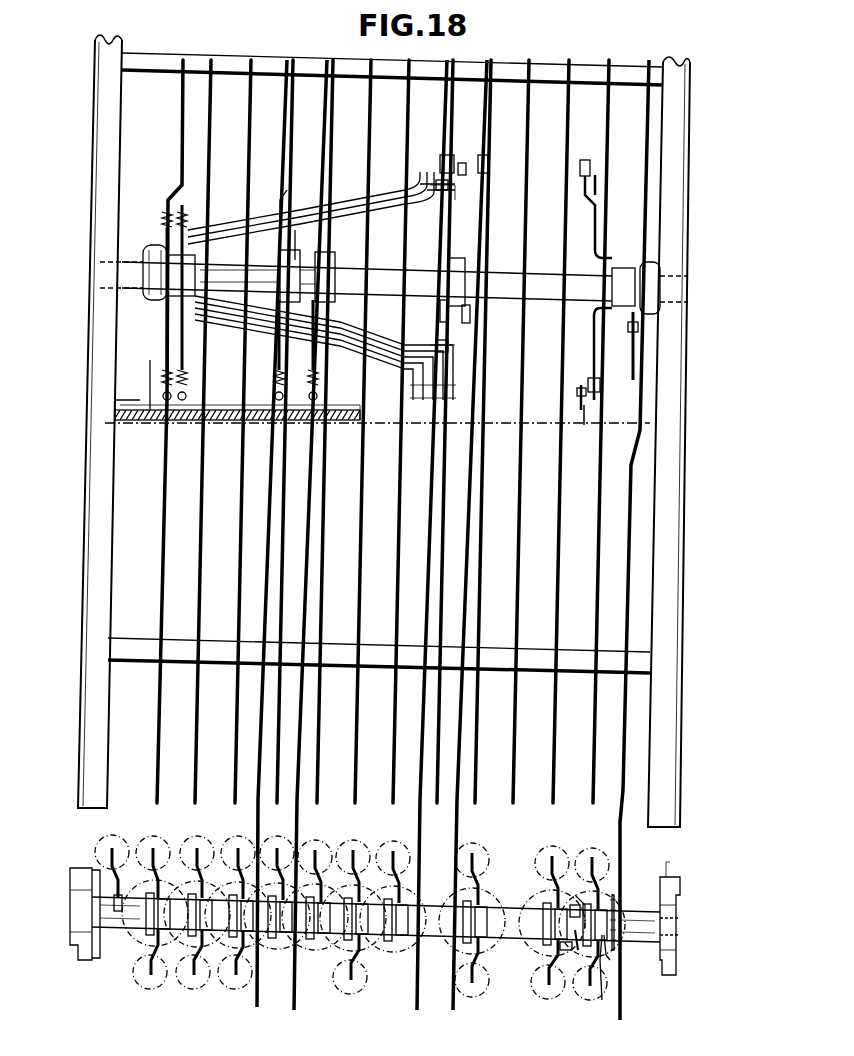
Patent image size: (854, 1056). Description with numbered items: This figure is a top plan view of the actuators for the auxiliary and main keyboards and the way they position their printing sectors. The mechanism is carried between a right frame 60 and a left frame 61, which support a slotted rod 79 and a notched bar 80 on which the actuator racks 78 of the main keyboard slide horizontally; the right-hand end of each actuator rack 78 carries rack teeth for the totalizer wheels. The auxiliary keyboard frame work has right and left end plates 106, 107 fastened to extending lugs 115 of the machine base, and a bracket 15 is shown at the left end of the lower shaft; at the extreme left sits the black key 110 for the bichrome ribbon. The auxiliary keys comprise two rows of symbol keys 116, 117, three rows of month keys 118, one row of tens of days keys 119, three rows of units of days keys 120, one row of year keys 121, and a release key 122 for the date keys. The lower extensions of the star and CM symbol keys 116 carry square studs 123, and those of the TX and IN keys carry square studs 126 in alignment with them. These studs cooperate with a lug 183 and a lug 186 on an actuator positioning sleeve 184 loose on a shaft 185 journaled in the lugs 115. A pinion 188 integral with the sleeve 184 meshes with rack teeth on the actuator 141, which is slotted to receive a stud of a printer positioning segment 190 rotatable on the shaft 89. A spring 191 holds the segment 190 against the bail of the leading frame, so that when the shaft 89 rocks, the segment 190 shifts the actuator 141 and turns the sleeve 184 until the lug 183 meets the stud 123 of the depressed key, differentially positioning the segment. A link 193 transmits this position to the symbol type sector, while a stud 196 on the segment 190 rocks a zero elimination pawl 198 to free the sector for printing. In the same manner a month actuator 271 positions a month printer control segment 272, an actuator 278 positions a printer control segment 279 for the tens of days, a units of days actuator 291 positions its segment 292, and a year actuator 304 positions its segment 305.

The frame bracket 15 is at (72, 877).
The right frame 60 is at (678, 462).
The left frame 61 is at (98, 558).
The actuator rack 78 is at (592, 752).
The slotted rod 79 is at (588, 656).
The notched bar 80 is at (443, 65).
The shaft 89 is at (558, 282).
The right end plate 106 is at (672, 878).
The left end plate 107 is at (96, 868).
The black key 110 is at (128, 844).
The extending lugs 115 is at (676, 884).
The symbol keys 116 is at (608, 836).
The symbol keys 117 is at (568, 836).
The month keys 118 is at (198, 848).
The tens of days keys 119 is at (286, 846).
The units of days keys 120 is at (392, 848).
The year keys 121 is at (480, 856).
The release key 122 is at (350, 986).
The square stud 123 is at (620, 900).
The square stud 126 is at (582, 902).
The actuator 141 is at (634, 515).
The lug 183 is at (602, 1000).
The actuator positioning sleeve 184 is at (652, 916).
The shaft 185 is at (678, 914).
The lug 186 is at (570, 950).
The pinion 188 is at (612, 958).
The printer positioning segment 190 is at (640, 366).
The spring 191 is at (600, 388).
The link 193 is at (598, 160).
The stud 196 is at (578, 392).
The zero elimination pawl 198 is at (582, 411).
The month actuator 271 is at (270, 816).
The month printer control segment 272 is at (443, 160).
The actuator 278 is at (300, 825).
The printer control segment 279 is at (440, 162).
The units of days actuator 291 is at (420, 828).
The segment 292 is at (460, 200).
The year actuator 304 is at (453, 828).
The segment 305 is at (468, 186).